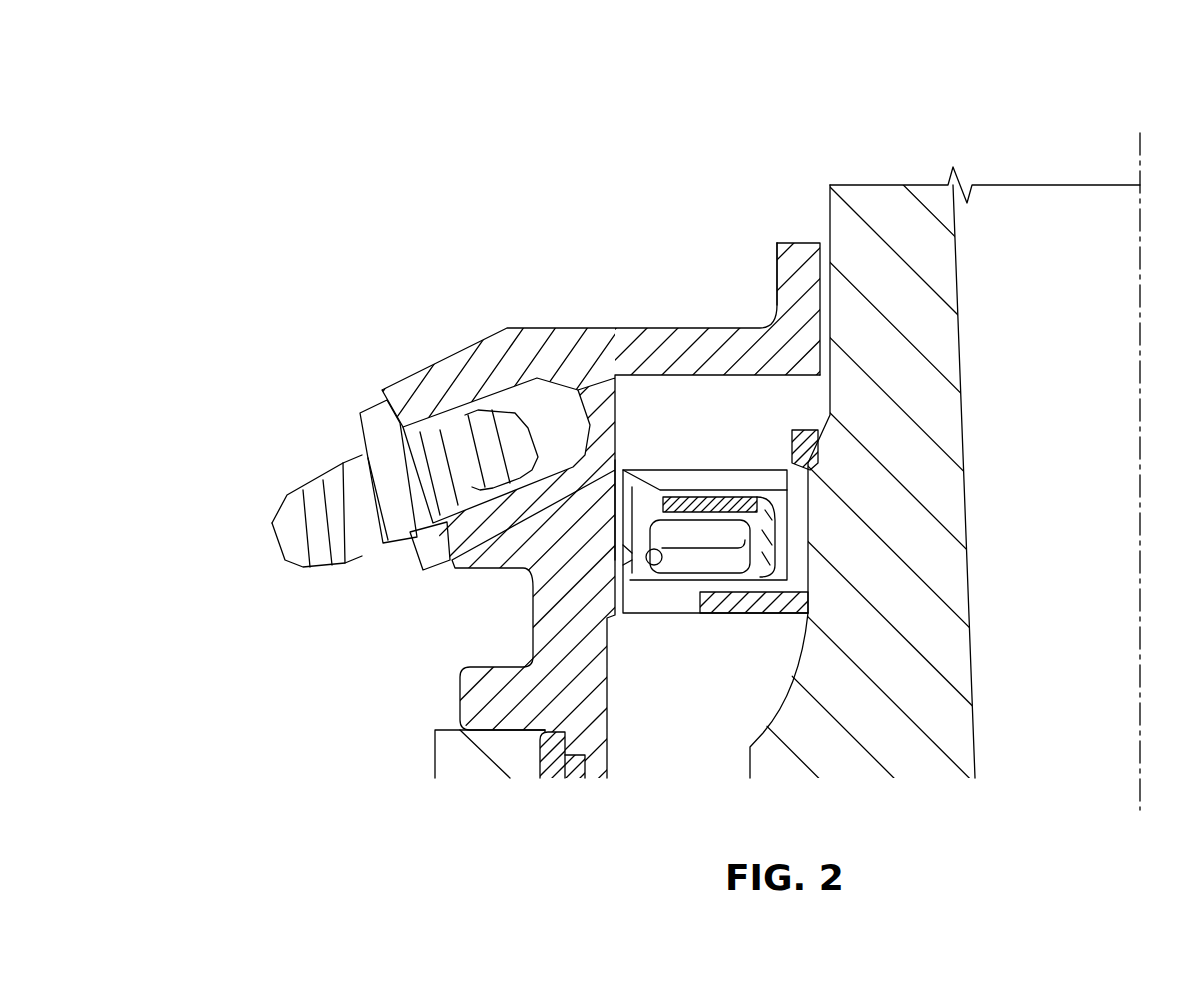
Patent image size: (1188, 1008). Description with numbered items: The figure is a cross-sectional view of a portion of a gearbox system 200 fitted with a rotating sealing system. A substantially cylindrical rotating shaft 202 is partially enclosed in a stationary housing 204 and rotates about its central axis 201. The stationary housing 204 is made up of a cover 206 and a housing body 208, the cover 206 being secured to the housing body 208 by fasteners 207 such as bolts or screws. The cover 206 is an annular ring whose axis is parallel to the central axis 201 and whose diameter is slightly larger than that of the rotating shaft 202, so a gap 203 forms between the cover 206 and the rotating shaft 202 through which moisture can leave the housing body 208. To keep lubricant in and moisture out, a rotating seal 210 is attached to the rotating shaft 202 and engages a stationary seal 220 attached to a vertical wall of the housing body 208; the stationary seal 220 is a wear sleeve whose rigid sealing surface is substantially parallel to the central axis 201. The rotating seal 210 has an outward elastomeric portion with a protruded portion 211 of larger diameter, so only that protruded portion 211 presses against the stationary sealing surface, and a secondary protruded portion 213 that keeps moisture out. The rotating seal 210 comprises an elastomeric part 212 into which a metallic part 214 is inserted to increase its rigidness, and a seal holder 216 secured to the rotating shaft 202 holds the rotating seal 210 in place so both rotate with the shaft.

The gearbox system 200 is at (241, 98).
The central axis 201 is at (1136, 120).
The rotating shaft 202 is at (892, 215).
The gap 203 is at (822, 237).
The stationary housing 204 is at (349, 336).
The cover 206 is at (647, 352).
The fasteners 207 is at (342, 482).
The housing body 208 is at (502, 700).
The rotating seal 210 is at (745, 549).
The protruded portion 211 is at (625, 560).
The elastomeric part 212 is at (645, 565).
The secondary protruded portion 213 is at (624, 470).
The metallic part 214 is at (741, 505).
The seal holder 216 is at (787, 598).
The stationary seal 220 is at (622, 502).